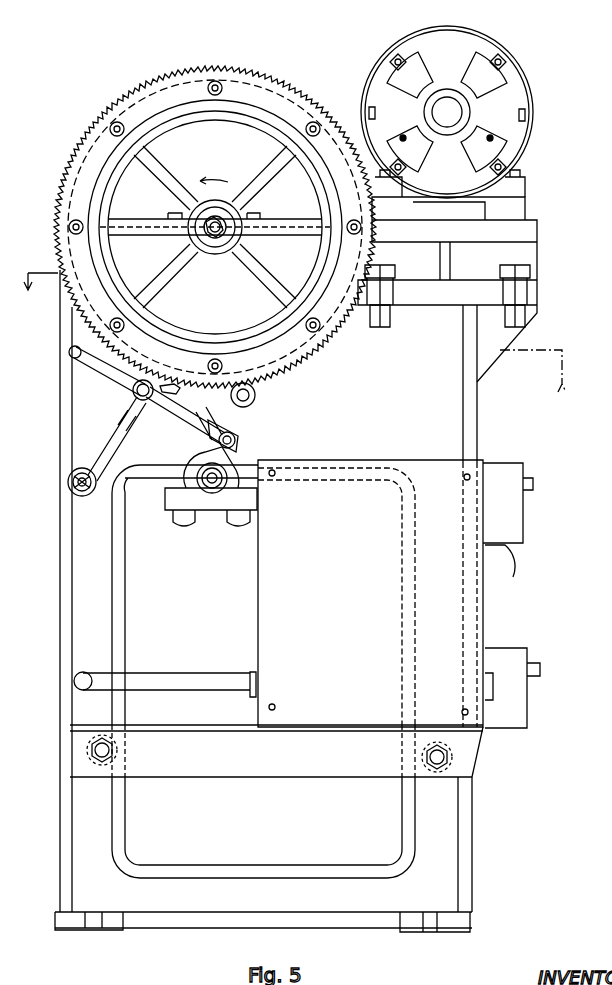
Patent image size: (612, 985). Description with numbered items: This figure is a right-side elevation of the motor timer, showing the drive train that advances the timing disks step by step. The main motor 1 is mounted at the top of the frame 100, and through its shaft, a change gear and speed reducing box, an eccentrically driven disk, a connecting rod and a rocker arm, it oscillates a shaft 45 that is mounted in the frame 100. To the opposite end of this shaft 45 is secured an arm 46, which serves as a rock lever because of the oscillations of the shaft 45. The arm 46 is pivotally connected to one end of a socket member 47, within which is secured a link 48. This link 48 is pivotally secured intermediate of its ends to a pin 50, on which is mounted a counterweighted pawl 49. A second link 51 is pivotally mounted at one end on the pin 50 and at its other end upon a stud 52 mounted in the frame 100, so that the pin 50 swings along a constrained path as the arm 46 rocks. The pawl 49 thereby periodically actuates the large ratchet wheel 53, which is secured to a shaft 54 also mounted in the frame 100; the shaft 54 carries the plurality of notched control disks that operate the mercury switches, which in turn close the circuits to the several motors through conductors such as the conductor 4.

The main motor 1 is at (487, 48).
The conductor 4 is at (291, 346).
The shaft 45 is at (214, 510).
The arm 46 is at (242, 460).
The socket member 47 is at (237, 434).
The link 48 is at (188, 420).
The counterweighted pawl 49 is at (183, 392).
The pin 50 is at (133, 392).
The link 51 is at (129, 425).
The stud 52 is at (68, 486).
The ratchet wheel 53 is at (298, 362).
The shaft 54 is at (215, 240).
The frame 100 is at (470, 428).